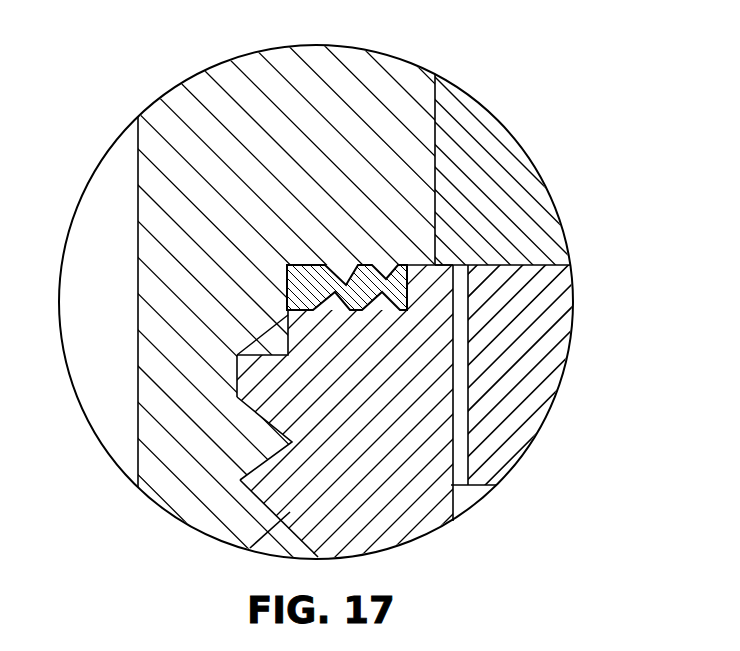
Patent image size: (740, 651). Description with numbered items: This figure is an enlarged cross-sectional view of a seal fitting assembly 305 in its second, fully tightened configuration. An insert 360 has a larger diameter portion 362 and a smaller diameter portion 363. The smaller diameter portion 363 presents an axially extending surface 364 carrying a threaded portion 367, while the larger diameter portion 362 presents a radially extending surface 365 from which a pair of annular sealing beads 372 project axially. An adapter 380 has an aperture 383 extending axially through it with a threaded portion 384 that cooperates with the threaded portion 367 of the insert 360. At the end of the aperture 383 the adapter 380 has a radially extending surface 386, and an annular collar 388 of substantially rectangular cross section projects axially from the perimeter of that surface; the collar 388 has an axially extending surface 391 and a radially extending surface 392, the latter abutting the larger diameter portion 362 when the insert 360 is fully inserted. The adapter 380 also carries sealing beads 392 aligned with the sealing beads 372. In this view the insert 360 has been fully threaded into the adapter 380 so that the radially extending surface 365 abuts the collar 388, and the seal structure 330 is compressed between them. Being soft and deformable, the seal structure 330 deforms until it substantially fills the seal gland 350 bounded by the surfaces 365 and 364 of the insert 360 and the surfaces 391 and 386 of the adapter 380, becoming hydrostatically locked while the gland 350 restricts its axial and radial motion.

The downhole tool 305 is at (507, 152).
The seal structure 330 is at (409, 297).
The seal gland 350 is at (283, 262).
The insert 360 is at (208, 129).
The larger diameter portion 362 is at (440, 120).
The smaller diameter portion 363 is at (297, 527).
The axially extending surface 364 is at (290, 318).
The radially extending surface 365 is at (443, 265).
The threaded portion 367 is at (297, 443).
The annular sealing beads 372 is at (408, 272).
The adapter 380 is at (454, 438).
The aperture 383 is at (237, 354).
The threaded portion 384 is at (234, 395).
The radially extending surface 386 is at (335, 305).
The annular collar 388 is at (457, 294).
The axially extending surface 391 is at (396, 322).
The radially extending surface 392 is at (380, 300).